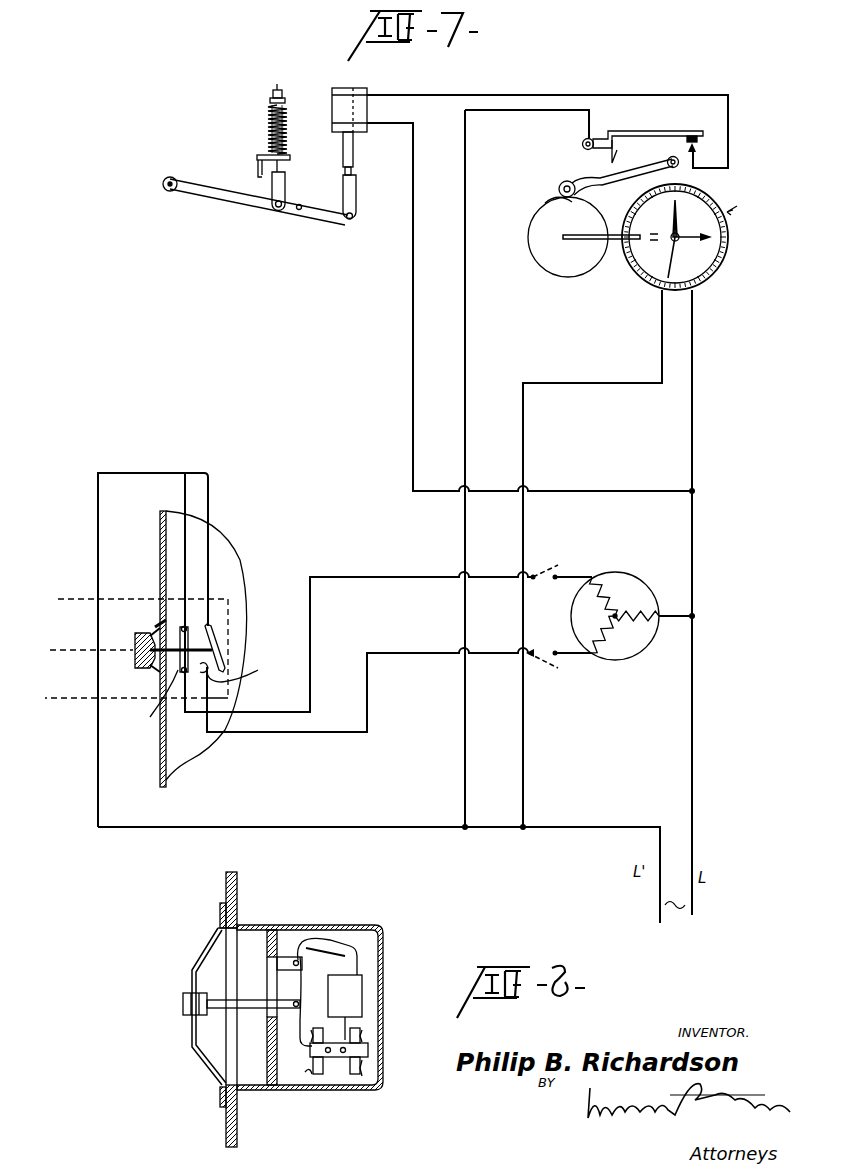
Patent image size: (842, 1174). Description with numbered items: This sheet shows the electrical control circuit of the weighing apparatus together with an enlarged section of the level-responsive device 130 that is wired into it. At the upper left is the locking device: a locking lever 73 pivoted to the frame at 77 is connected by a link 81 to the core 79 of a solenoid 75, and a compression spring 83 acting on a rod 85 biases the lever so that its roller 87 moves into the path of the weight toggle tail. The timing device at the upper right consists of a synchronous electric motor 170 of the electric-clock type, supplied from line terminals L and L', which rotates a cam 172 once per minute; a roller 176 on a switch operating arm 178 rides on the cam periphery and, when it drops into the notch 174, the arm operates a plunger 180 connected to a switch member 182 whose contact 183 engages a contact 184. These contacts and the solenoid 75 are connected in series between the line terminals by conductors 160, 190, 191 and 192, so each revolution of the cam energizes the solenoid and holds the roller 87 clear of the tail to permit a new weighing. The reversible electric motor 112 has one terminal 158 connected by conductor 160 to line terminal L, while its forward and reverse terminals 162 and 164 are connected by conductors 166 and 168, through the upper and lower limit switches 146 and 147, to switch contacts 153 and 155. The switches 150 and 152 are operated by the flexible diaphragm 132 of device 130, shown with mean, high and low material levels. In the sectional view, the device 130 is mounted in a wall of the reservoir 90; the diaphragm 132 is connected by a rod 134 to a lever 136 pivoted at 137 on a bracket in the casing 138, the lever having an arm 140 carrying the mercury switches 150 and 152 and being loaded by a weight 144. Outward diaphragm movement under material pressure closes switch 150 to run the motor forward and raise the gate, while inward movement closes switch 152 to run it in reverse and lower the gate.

In FIG. 7, the locking lever 73 is at (217, 194).
In FIG. 7, the solenoid 75 is at (332, 106).
In FIG. 7, the pivot 77 is at (298, 211).
In FIG. 7, the core 79 is at (351, 150).
In FIG. 7, the link 81 is at (354, 189).
In FIG. 7, the compression spring 83 is at (270, 125).
In FIG. 7, the rod 85 is at (270, 92).
In FIG. 7, the roller 87 is at (163, 185).
In FIG. 8, the reservoir 90 is at (226, 883).
In FIG. 7, the reversible electric motor 112 is at (632, 583).
In FIG. 7, the level-responsive device 130 is at (158, 672).
In FIG. 8, the level-responsive device 130 is at (346, 919).
In FIG. 7, the flexible diaphragm 132 is at (158, 624).
In FIG. 8, the flexible diaphragm 132 is at (208, 958).
In FIG. 8, the rod 134 is at (220, 1005).
In FIG. 8, the lever 136 is at (293, 980).
In FIG. 8, the pivot 137 is at (297, 930).
In FIG. 8, the casing 138 is at (372, 928).
In FIG. 8, the arm 140 is at (358, 1004).
In FIG. 8, the weight 144 is at (338, 1045).
In FIG. 7, the upper limit switch 146 is at (535, 585).
In FIG. 7, the lower limit switch 147 is at (545, 678).
In FIG. 7, the mercury switch 150 is at (194, 625).
In FIG. 8, the mercury switch 150 is at (338, 1062).
In FIG. 7, the mercury switch 152 is at (220, 640).
In FIG. 8, the mercury switch 152 is at (358, 1035).
In FIG. 7, the switch contact 153 is at (150, 717).
In FIG. 8, the switch contact 153 is at (368, 1067).
In FIG. 7, the switch contact 155 is at (247, 669).
In FIG. 8, the switch contact 155 is at (368, 1048).
In FIG. 7, the motor terminal 158 is at (665, 612).
In FIG. 7, the conductor 160 is at (694, 524).
In FIG. 7, the forward terminal 162 is at (588, 573).
In FIG. 7, the reverse terminal 164 is at (598, 660).
In FIG. 7, the conductor 166 is at (357, 575).
In FIG. 7, the conductor 168 is at (356, 735).
In FIG. 7, the synchronous electric motor 170 is at (718, 272).
In FIG. 7, the cam 172 is at (536, 266).
In FIG. 7, the notch 174 is at (548, 203).
In FIG. 7, the roller 176 is at (560, 181).
In FIG. 7, the switch operating arm 178 is at (584, 178).
In FIG. 7, the plunger 180 is at (639, 151).
In FIG. 7, the switch member 182 is at (672, 126).
In FIG. 7, the contact 183 is at (698, 139).
In FIG. 7, the contact 184 is at (698, 150).
In FIG. 7, the conductor 190 is at (413, 402).
In FIG. 7, the conductor 191 is at (567, 94).
In FIG. 7, the conductor 192 is at (466, 376).